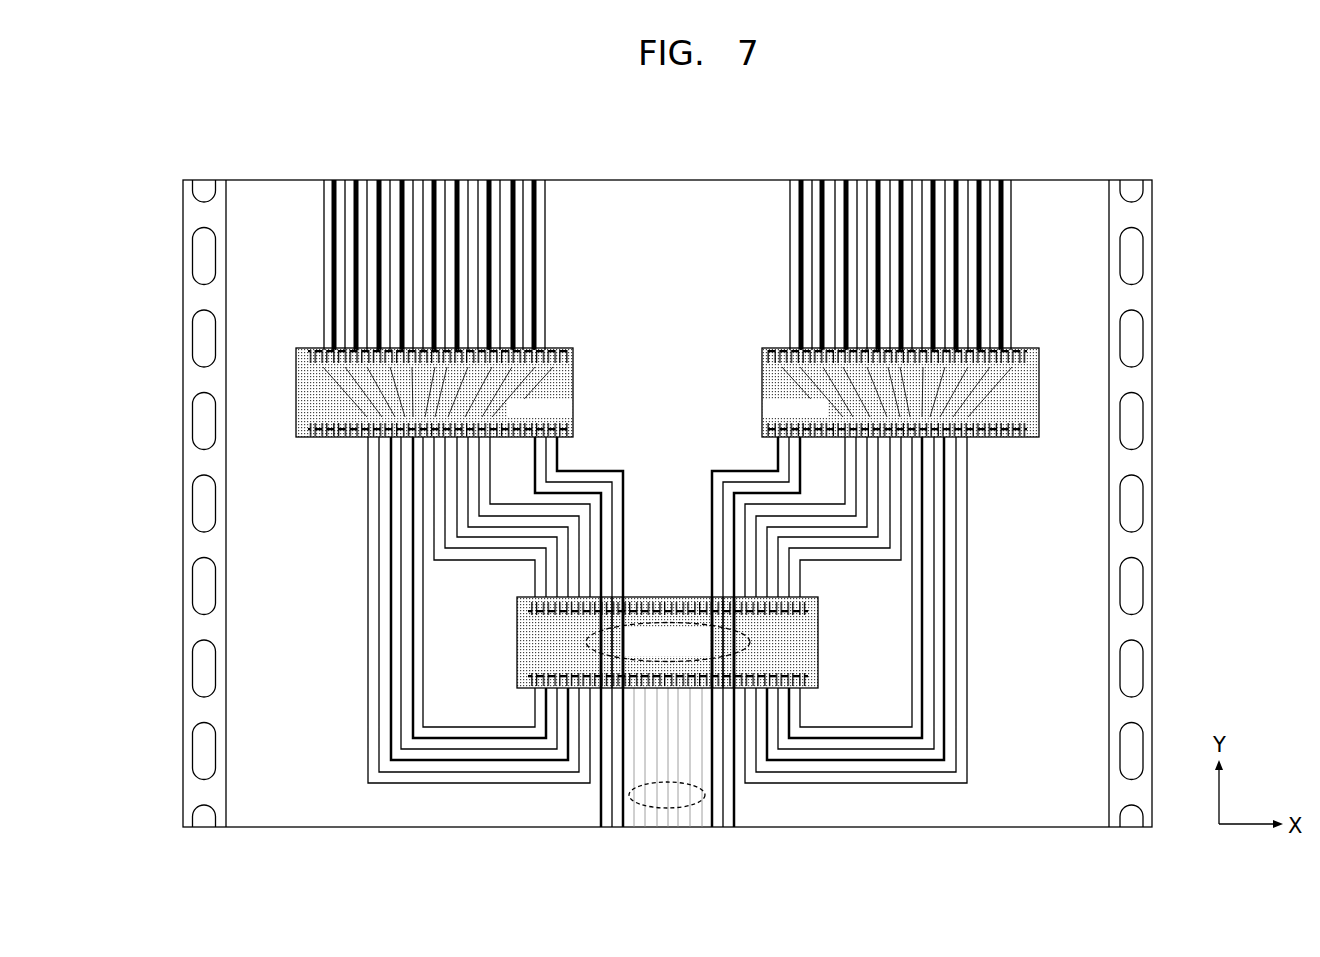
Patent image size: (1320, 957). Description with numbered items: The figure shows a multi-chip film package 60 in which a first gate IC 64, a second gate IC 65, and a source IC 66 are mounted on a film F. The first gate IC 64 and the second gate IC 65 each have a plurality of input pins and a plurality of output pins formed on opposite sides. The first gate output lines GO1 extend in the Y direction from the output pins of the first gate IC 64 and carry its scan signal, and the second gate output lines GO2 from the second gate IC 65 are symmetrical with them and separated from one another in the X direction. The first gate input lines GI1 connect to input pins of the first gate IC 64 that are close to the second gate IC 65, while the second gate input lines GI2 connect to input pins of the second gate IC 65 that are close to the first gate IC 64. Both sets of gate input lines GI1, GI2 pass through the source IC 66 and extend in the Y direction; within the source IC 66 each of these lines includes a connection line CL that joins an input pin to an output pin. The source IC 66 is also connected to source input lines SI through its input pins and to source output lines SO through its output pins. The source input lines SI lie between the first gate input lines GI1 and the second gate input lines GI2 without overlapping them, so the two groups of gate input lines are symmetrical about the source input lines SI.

The multi-chip film package 60 is at (1100, 137).
The film F is at (1080, 214).
The source output lines SO is at (323, 243).
The first gate output lines GO1 is at (330, 289).
The second gate output lines GO2 is at (1003, 302).
The first gate IC 64 is at (296, 402).
The second gate IC 65 is at (1039, 395).
The source IC 66 is at (670, 642).
The connection line CL is at (580, 640).
The first gate input lines GI1 is at (600, 803).
The second gate input lines GI2 is at (736, 803).
The source input lines SI is at (686, 811).